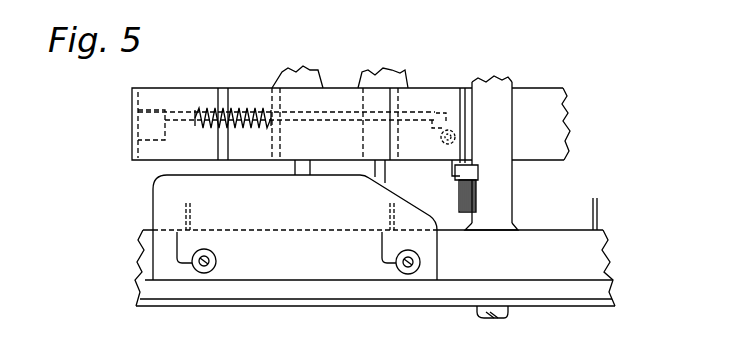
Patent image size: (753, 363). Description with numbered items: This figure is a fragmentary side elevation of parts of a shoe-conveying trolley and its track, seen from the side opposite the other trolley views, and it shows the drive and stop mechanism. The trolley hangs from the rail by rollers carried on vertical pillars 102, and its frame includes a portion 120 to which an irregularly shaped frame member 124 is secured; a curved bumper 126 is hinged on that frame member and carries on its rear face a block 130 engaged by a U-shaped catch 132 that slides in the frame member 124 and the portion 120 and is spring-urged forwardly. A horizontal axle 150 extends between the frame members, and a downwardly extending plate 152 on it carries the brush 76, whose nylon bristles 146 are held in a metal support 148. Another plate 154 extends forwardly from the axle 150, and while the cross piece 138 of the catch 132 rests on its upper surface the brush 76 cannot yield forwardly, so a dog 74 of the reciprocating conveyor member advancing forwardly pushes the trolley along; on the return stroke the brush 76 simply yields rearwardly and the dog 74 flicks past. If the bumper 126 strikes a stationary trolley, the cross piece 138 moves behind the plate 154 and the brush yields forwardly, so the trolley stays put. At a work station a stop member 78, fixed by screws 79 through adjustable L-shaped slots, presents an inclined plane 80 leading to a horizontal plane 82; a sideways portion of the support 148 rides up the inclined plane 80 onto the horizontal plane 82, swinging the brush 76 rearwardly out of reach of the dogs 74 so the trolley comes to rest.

The dogs 74 is at (184, 214).
The brush 76 is at (474, 176).
The stop member 78 is at (276, 214).
The screws 79 is at (378, 253).
The inclined plane 80 is at (390, 190).
The horizontal plane 82 is at (168, 178).
The vertical pillars 102 is at (498, 92).
The portion of the frame member 120 is at (397, 100).
The frame member 124 is at (276, 132).
The curved bumper 126 is at (140, 144).
The block 130 is at (147, 110).
The catch 132 is at (306, 122).
The cross piece 138 is at (438, 114).
The nylon bristles 146 is at (477, 204).
The metal support 148 is at (478, 166).
The horizontal axle 150 is at (455, 131).
The plate 152 is at (458, 172).
The plate 154 is at (452, 130).